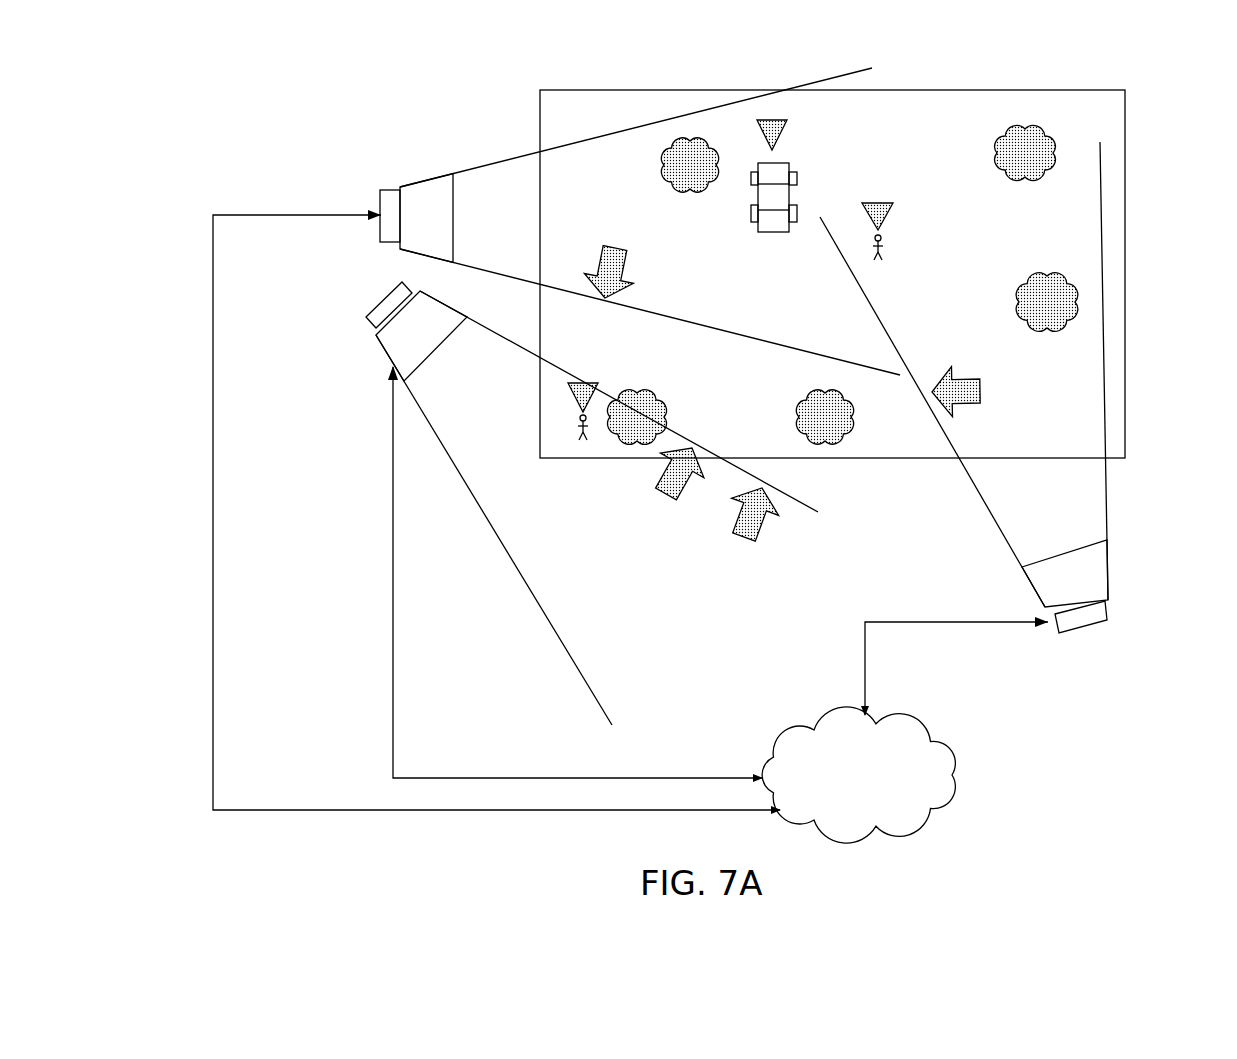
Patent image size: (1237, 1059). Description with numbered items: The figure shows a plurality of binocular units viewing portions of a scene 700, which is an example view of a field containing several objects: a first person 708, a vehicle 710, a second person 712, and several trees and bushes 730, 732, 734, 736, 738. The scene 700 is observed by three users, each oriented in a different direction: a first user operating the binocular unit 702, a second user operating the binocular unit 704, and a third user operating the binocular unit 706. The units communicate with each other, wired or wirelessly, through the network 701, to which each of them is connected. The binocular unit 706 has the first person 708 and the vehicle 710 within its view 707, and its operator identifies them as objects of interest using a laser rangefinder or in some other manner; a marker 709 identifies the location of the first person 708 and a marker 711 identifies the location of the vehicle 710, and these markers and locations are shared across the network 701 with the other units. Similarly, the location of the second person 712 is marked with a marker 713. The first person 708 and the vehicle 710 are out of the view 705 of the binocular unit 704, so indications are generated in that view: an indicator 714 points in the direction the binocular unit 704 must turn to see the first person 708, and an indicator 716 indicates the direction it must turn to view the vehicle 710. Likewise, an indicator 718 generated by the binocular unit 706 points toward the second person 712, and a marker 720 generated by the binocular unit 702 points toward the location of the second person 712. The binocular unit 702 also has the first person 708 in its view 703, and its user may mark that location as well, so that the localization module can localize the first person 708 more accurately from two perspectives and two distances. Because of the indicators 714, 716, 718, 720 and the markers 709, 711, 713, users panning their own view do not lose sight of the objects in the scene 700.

The scene 700 is at (1084, 88).
The network 701 is at (958, 778).
The binocular unit 702 is at (1082, 632).
The view of binocular unit 702 703 is at (1109, 496).
The binocular unit 704 is at (366, 318).
The view of binocular unit 704 705 is at (512, 562).
The binocular unit 706 is at (391, 188).
The view of binocular unit 706 707 is at (497, 160).
The first person 708 is at (882, 258).
The marker 709 is at (877, 200).
The vehicle 710 is at (773, 233).
The marker 711 is at (773, 117).
The second person 712 is at (584, 445).
The marker 713 is at (584, 381).
The indicator 714 is at (742, 540).
The indicator 716 is at (666, 497).
The indicator 718 is at (617, 244).
The marker 720 is at (981, 386).
The tree or bush 730 is at (996, 153).
The tree or bush 732 is at (1044, 275).
The tree or bush 734 is at (662, 165).
The tree or bush 736 is at (664, 410).
The tree or bush 738 is at (800, 400).